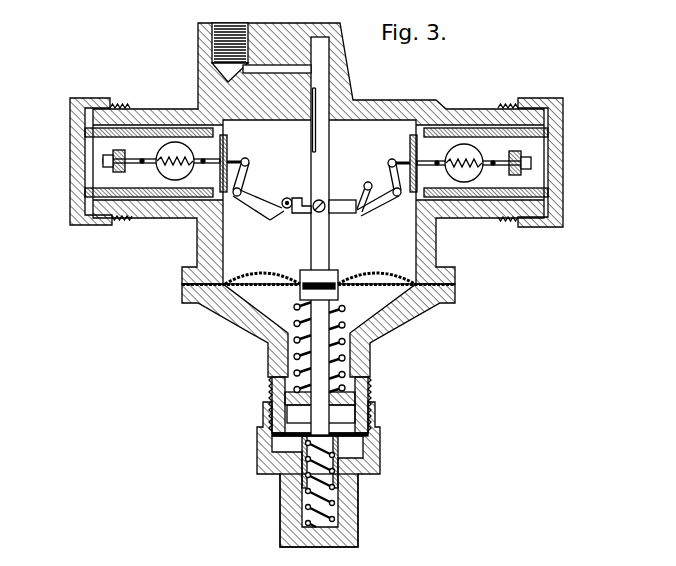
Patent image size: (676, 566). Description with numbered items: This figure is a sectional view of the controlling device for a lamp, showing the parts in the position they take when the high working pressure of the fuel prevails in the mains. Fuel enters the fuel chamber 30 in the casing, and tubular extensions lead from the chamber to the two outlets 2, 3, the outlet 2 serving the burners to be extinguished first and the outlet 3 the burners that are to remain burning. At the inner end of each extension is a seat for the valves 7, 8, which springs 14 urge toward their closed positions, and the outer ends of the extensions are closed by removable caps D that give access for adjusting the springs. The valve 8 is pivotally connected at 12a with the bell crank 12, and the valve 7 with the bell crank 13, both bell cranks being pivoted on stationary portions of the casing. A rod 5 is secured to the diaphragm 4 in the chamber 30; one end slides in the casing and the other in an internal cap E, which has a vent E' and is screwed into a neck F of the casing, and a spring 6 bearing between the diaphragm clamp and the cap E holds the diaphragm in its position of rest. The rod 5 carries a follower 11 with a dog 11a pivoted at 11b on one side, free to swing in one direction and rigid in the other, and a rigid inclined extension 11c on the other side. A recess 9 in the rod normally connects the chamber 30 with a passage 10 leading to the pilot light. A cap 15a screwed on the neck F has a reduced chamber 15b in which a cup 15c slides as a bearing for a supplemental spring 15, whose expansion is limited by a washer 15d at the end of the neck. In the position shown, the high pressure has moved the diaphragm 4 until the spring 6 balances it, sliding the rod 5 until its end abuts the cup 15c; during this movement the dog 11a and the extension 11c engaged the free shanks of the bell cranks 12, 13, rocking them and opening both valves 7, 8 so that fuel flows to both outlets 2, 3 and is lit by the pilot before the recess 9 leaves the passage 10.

The outlet 2 is at (170, 155).
The outlet 3 is at (467, 143).
The diaphragm 4 is at (383, 278).
The rod 5 is at (329, 240).
The spring 6 is at (296, 309).
The valve 7 is at (409, 146).
The valve 8 is at (228, 146).
The channel or recess 9 is at (311, 131).
The passage 10 is at (270, 70).
The follower 11 is at (338, 207).
The dog 11a is at (287, 212).
The pivot 11b is at (289, 198).
The rigid inclined extension 11c is at (367, 181).
The bell crank 12 is at (256, 200).
The pivotal connection 12a is at (249, 162).
The bell crank 13 is at (378, 206).
The springs 14 is at (152, 198).
The supplemental spring 15 is at (283, 490).
The cap 15a is at (380, 447).
The reduced chamber 15b is at (340, 512).
The cup 15c is at (300, 447).
The washer 15d is at (291, 424).
The fuel chamber 30 is at (359, 125).
The removable caps D is at (70, 164).
The internal cap E is at (345, 405).
The vent E' is at (255, 405).
The neck F is at (370, 360).